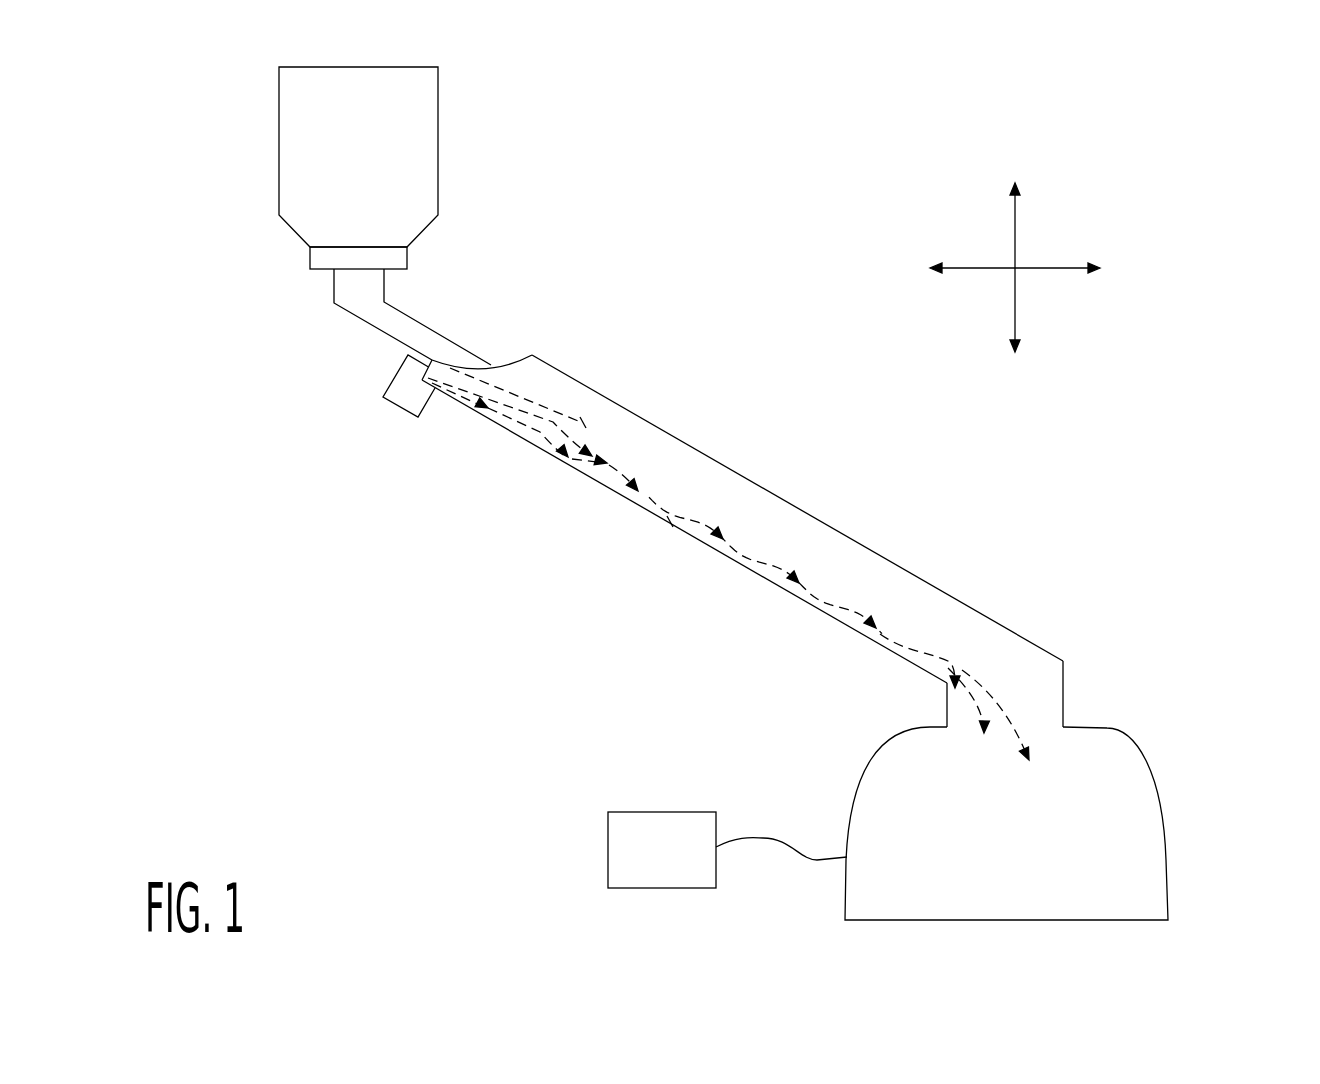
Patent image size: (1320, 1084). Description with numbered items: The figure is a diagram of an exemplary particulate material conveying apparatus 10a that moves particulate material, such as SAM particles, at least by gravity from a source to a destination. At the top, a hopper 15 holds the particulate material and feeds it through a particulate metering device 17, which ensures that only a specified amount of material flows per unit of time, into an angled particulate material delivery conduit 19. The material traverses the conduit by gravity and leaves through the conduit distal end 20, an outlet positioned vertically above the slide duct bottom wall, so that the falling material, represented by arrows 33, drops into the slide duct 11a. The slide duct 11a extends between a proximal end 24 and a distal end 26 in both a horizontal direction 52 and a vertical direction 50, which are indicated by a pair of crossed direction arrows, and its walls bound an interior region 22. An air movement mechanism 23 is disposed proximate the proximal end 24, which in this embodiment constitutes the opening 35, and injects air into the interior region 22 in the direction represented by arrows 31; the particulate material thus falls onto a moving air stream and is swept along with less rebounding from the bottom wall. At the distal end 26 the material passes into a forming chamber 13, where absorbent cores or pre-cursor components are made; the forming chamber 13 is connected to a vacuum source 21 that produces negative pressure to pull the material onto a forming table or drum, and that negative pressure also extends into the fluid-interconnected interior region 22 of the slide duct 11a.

The particulate material conveying apparatus 10a is at (968, 458).
The slide duct 11a is at (742, 479).
The forming chamber 13 is at (1165, 828).
The hopper 15 is at (438, 127).
The particulate metering device 17 is at (407, 258).
The particulate material delivery conduit 19 is at (427, 328).
The conduit distal end 20 is at (567, 412).
The vacuum source 21 is at (648, 812).
The interior region 22 is at (740, 516).
The air movement mechanism 23 is at (390, 401).
The proximal end 24 is at (532, 355).
The distal end 26 is at (1010, 683).
The arrows representing direction of air 31 is at (670, 523).
The arrows representing particulate material exiting conduit 33 is at (583, 422).
The opening 35 is at (508, 356).
The vertical direction 50 is at (1017, 227).
The horizontal direction 52 is at (1045, 269).